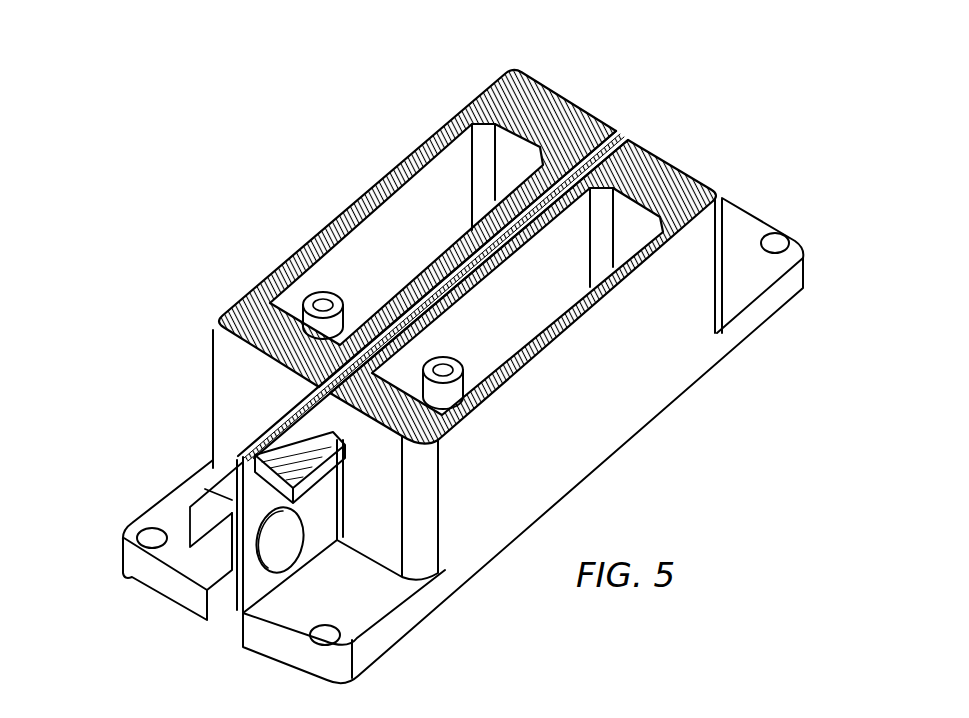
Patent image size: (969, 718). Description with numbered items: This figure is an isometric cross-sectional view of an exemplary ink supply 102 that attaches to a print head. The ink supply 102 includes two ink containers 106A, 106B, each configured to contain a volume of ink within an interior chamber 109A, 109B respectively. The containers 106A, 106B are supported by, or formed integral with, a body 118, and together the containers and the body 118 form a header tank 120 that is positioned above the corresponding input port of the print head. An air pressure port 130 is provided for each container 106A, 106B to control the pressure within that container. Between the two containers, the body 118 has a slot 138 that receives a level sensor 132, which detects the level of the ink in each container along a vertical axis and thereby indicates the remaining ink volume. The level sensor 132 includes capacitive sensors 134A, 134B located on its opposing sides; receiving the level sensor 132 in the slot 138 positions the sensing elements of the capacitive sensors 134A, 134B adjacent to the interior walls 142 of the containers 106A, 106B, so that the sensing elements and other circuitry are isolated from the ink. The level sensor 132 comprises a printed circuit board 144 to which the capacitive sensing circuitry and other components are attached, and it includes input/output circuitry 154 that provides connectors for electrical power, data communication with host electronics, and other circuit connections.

The ink supply 102 is at (172, 146).
The body 118 is at (229, 307).
The header tank 120 is at (494, 86).
The ink container 106A is at (641, 214).
The ink container 106B is at (443, 181).
The interior chamber 109A is at (612, 217).
The interior chamber 109B is at (504, 156).
The air pressure port 130 is at (306, 293).
The level sensor 132 is at (214, 542).
The capacitive sensor 134A is at (534, 260).
The capacitive sensor 134B is at (461, 235).
The slot 138 is at (627, 116).
The interior walls 142 is at (388, 283).
The printed circuit board 144 is at (317, 505).
The input/output circuitry 154 is at (317, 440).